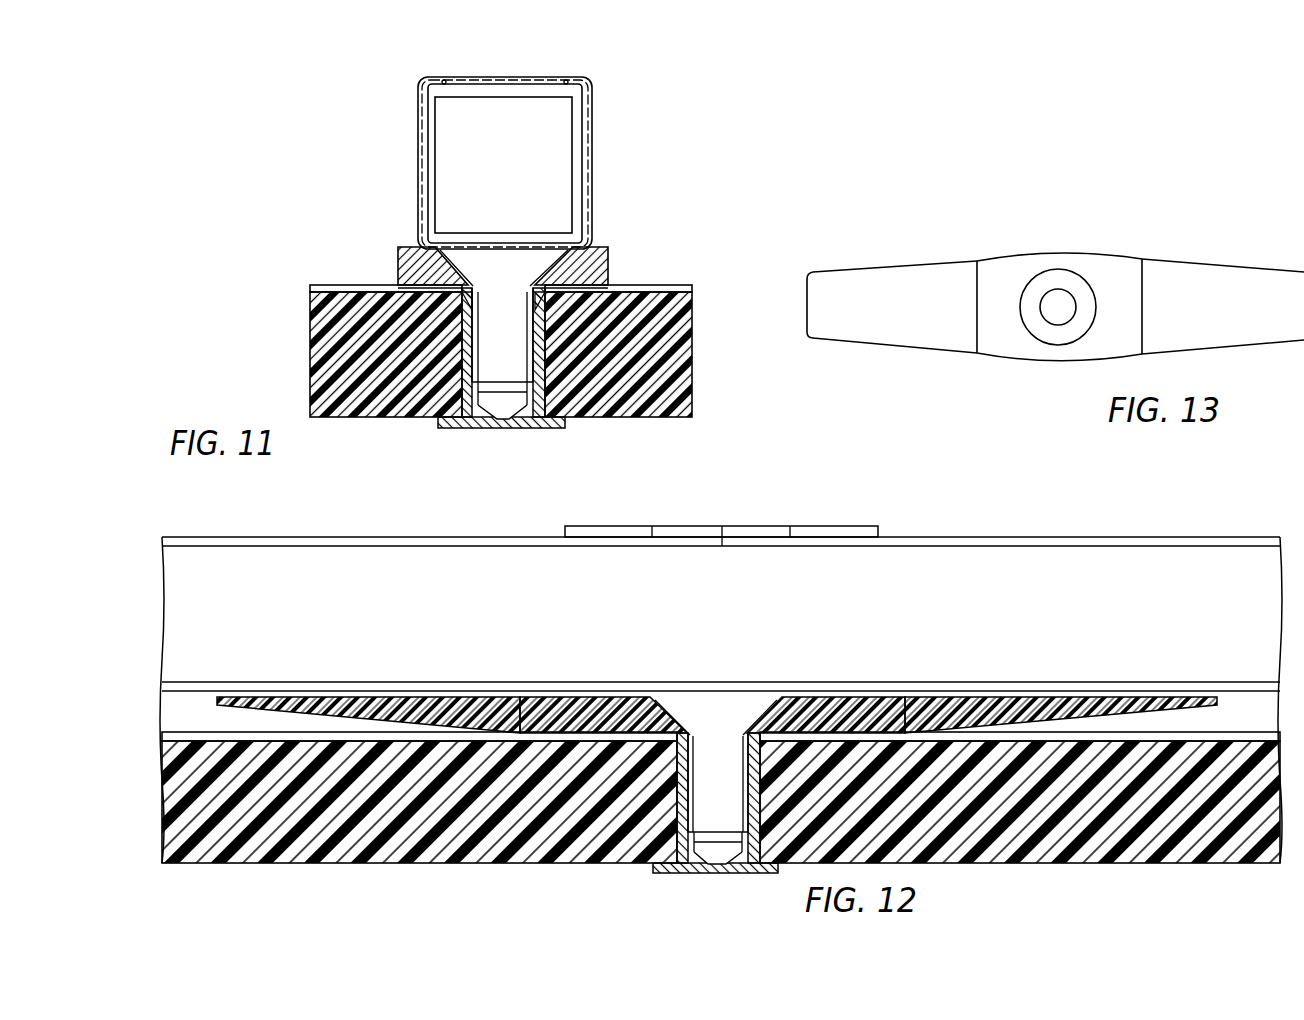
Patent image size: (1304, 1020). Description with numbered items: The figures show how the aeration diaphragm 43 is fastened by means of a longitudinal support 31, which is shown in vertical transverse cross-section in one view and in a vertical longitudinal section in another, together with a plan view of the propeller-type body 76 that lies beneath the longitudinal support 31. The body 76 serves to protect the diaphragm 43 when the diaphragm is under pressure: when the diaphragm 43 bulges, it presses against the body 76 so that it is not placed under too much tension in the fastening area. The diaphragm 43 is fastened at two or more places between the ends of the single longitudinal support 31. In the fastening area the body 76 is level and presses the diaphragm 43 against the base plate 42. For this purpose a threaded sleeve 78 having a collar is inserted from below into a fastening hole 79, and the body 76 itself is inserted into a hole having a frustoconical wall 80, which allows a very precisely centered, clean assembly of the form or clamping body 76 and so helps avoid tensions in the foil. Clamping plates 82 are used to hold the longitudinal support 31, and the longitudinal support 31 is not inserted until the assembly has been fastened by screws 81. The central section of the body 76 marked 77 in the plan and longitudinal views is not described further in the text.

In FIG. 11, the longitudinal support 31 is at (400, 63).
In FIG. 12, the longitudinal support 31 is at (1033, 518).
In FIG. 11, the base plate 42 is at (390, 405).
In FIG. 12, the base plate 42 is at (563, 840).
In FIG. 11, the diaphragm 43 is at (318, 285).
In FIG. 12, the diaphragm 43 is at (225, 738).
In FIG. 11, the propeller-type body 76 is at (397, 263).
In FIG. 13, the propeller-type body 76 is at (1222, 276).
In FIG. 12, the propeller-type body 76 is at (393, 694).
In FIG. 13, the central section of retainer plate 77 is at (1113, 268).
In FIG. 12, the central section of retainer plate 77 is at (518, 733).
In FIG. 11, the threaded sleeve 78 is at (530, 427).
In FIG. 11, the fastening hole 79 is at (562, 365).
In FIG. 11, the frustoconical wall 80 is at (402, 288).
In FIG. 13, the frustoconical wall 80 is at (1047, 278).
In FIG. 11, the screws 81 is at (485, 368).
In FIG. 11, the clamping plates 82 is at (487, 78).